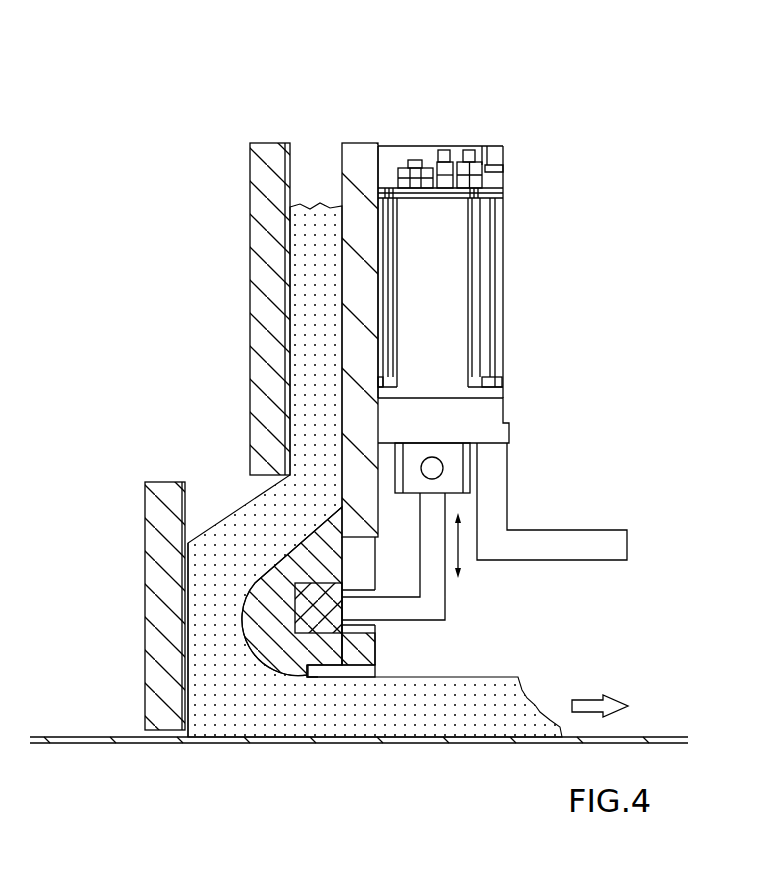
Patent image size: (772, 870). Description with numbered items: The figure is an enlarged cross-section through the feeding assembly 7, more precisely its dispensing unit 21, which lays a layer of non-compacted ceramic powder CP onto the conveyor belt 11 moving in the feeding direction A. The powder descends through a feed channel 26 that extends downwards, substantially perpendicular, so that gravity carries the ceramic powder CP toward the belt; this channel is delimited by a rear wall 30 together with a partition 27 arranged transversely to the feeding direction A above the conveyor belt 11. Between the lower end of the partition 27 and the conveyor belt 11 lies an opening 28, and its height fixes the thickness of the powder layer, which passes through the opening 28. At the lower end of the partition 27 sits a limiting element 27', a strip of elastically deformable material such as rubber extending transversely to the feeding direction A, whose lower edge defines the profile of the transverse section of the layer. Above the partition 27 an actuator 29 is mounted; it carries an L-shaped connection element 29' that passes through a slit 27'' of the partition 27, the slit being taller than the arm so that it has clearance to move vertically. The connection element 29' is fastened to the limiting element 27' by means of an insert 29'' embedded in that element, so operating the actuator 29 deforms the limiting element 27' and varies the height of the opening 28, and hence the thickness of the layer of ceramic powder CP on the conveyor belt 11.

The feeding assembly 7 is at (487, 98).
The conveyor belt 11 is at (667, 737).
The dispensing unit 21 is at (357, 115).
The feed channel 26 is at (340, 323).
The partition 27 is at (384, 722).
The limiting element 27' is at (282, 658).
The slit 27'' is at (409, 601).
The opening 28 is at (302, 680).
The actuator 29 is at (499, 292).
The connection element 29' is at (441, 565).
The insert 29'' is at (360, 584).
The rear wall 30 is at (263, 218).
The ceramic powder CP is at (212, 712).
The feeding direction A is at (600, 692).